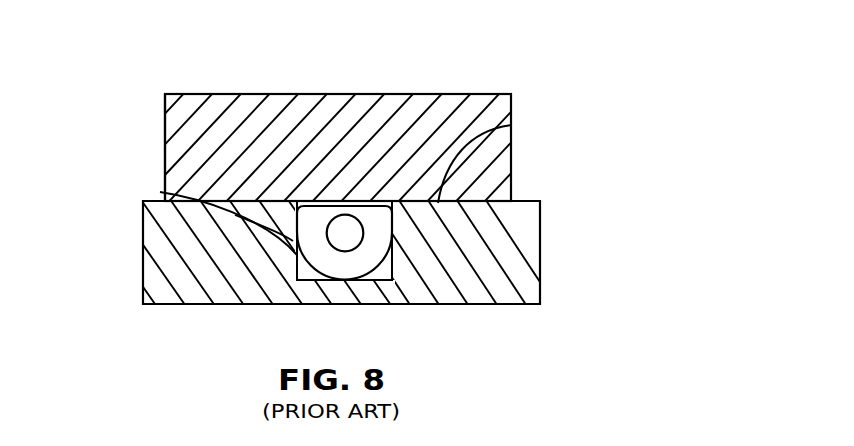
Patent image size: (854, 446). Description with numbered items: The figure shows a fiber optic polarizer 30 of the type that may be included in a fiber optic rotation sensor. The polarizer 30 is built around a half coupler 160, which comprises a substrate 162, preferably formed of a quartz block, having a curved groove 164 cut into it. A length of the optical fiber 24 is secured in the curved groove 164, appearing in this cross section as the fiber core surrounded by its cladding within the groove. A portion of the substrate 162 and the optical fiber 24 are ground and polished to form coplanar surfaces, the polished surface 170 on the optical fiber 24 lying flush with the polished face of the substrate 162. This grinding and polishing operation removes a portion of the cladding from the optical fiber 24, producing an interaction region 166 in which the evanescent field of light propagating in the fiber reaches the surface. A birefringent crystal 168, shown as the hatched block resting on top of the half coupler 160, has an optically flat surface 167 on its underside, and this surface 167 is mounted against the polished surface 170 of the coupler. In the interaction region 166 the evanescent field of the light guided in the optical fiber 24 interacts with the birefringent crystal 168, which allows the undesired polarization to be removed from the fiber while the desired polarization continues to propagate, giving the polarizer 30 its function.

The optical fiber 24 is at (378, 227).
The polarizer 30 is at (640, 130).
The half coupler 160 is at (157, 320).
The substrate 162 is at (516, 305).
The curved groove 164 is at (160, 192).
The interaction region 166 is at (364, 162).
The optically flat surface 167 is at (299, 209).
The birefringent crystal 168 is at (165, 135).
The coplanar surface 170 is at (512, 125).